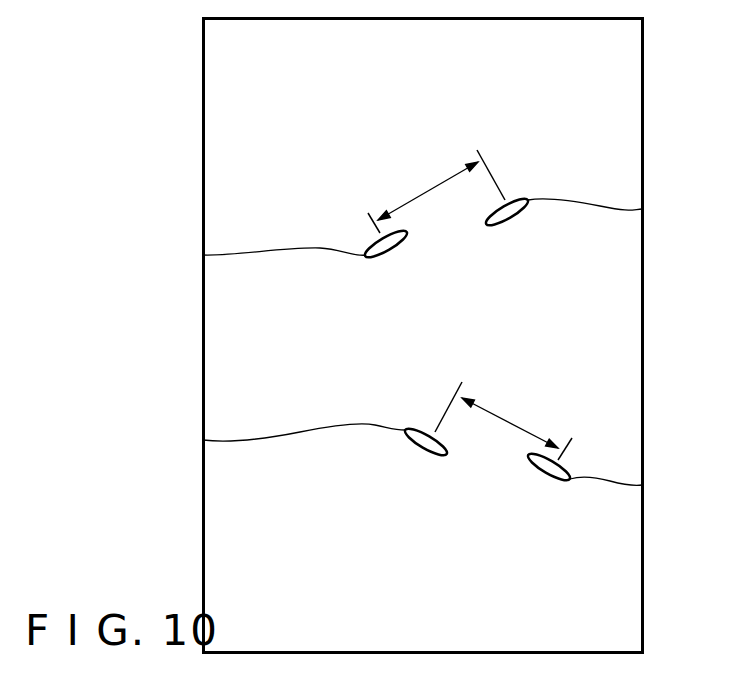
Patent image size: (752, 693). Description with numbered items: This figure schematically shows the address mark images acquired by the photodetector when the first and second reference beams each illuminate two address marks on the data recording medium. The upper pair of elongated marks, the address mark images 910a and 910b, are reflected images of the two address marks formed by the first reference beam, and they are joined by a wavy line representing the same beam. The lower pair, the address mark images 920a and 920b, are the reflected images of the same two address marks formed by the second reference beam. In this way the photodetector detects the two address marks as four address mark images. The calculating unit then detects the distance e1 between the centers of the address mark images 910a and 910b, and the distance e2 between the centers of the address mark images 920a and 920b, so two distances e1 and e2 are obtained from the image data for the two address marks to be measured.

The address mark image 910a is at (203, 254).
The address mark image 910b is at (642, 209).
The address mark image 920a is at (203, 439).
The address mark image 920b is at (642, 485).
The distance e1 is at (436, 191).
The distance e2 is at (503, 421).